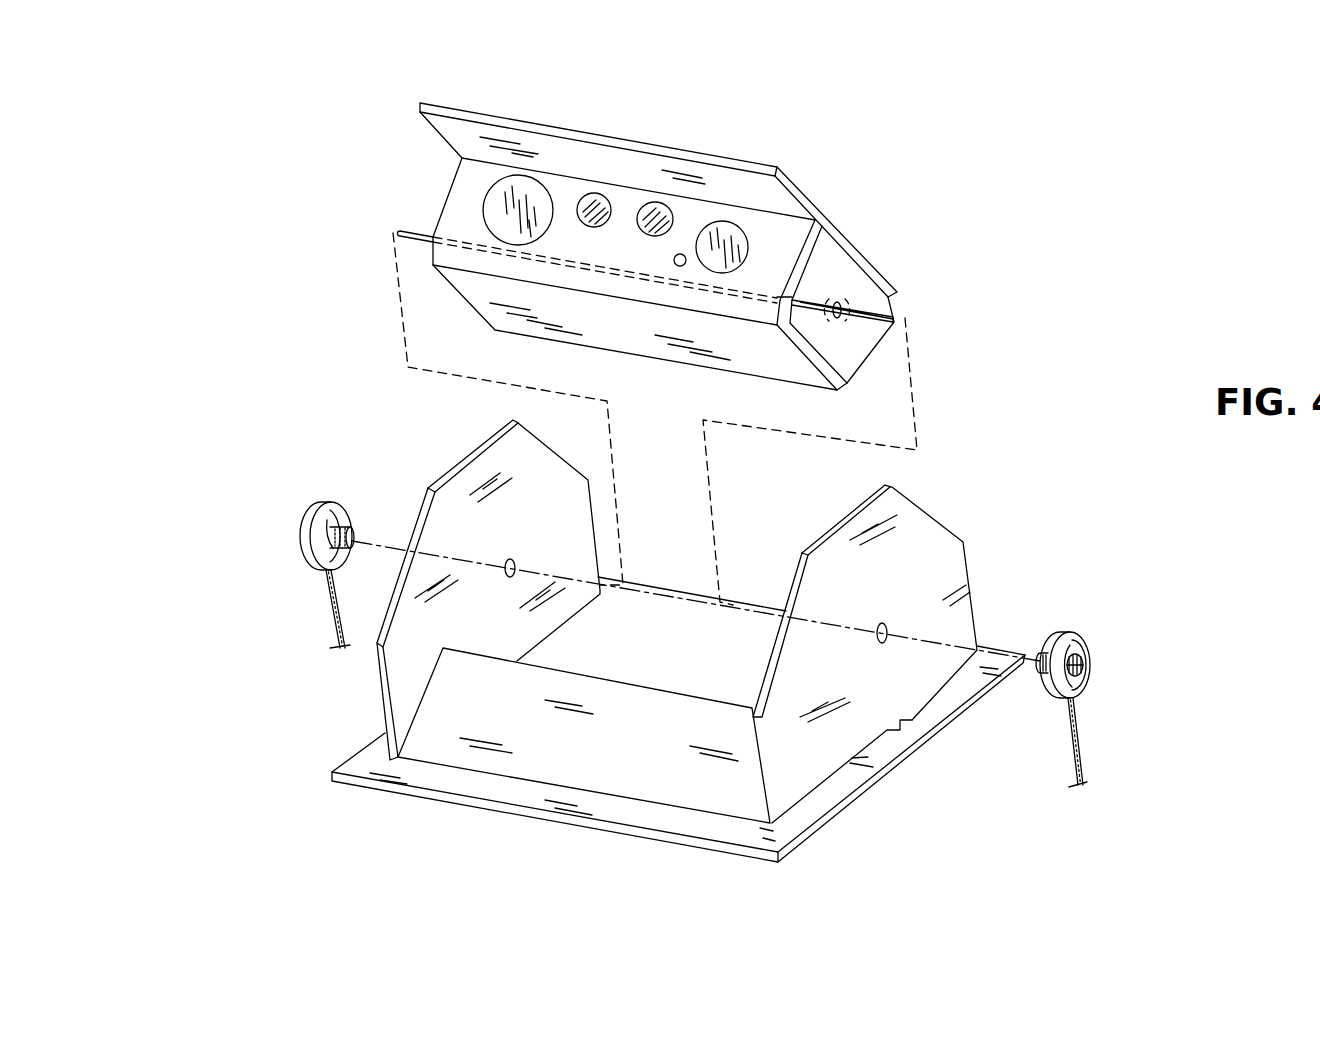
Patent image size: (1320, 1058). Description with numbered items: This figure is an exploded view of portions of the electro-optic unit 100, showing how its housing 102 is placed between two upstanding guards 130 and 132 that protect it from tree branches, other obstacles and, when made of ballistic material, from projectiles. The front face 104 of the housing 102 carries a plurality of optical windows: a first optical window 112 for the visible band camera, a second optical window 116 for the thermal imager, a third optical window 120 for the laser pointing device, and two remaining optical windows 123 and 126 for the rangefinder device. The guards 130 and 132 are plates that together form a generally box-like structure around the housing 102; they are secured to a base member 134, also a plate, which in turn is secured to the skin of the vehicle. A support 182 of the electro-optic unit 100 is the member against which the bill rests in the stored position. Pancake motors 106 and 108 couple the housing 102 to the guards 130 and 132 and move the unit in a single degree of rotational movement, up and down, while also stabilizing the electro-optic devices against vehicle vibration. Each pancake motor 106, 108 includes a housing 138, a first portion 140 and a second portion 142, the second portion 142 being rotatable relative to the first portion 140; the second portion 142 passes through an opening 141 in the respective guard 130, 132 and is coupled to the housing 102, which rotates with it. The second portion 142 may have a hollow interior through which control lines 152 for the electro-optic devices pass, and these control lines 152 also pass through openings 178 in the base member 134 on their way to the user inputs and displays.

The electro-optic unit 100 is at (1207, 173).
The housing 102 is at (874, 254).
The front face 104 is at (612, 247).
The first optical window 112 is at (528, 188).
The second optical window 116 is at (753, 223).
The third optical window 120 is at (681, 253).
The optical window 123 is at (594, 191).
The optical window 126 is at (658, 205).
The control lines 152 is at (410, 236).
The upstanding guard 130 is at (914, 534).
The upstanding guard 132 is at (494, 480).
The base member 134 is at (806, 825).
The housing 138 is at (296, 562).
The first portion 140 is at (320, 497).
The opening 141 is at (517, 565).
The second portion 142 is at (347, 520).
The pancake motor 106 is at (294, 527).
The pancake motor 108 is at (1100, 641).
The opening 178 is at (907, 733).
The support 182 is at (533, 755).